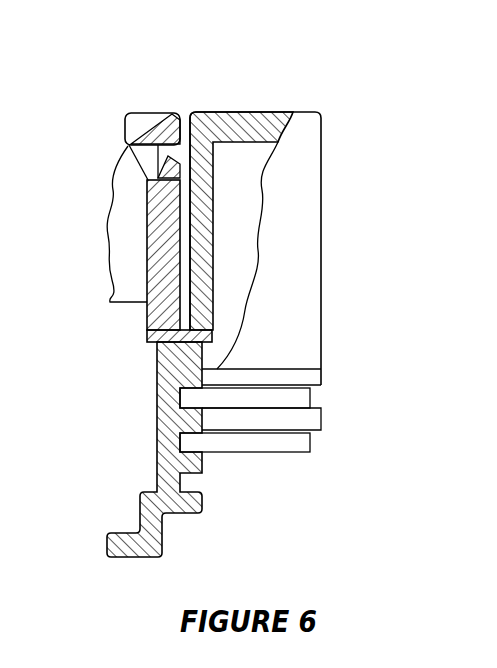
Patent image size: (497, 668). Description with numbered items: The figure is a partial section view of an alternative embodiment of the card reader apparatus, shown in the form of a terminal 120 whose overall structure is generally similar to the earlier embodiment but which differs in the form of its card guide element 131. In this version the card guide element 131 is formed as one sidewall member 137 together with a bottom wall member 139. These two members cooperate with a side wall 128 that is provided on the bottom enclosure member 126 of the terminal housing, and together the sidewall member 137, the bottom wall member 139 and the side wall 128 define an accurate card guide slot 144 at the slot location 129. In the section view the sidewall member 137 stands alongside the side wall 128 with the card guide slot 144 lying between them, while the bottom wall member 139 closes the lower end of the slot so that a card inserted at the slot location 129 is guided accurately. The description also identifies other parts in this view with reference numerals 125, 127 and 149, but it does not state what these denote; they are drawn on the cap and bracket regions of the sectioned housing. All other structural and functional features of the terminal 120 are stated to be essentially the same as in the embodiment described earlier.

The terminal 120 is at (352, 227).
The cap 125 is at (148, 125).
The bottom enclosure member 126 is at (185, 462).
The cap lip 127 is at (172, 113).
The side wall 128 is at (213, 143).
The slot location 129 is at (188, 118).
The card guide element 131 is at (129, 145).
The sidewall member 137 is at (165, 252).
The bottom wall member 139 is at (148, 333).
The card guide slot 144 is at (185, 205).
The bracket 149 is at (157, 365).